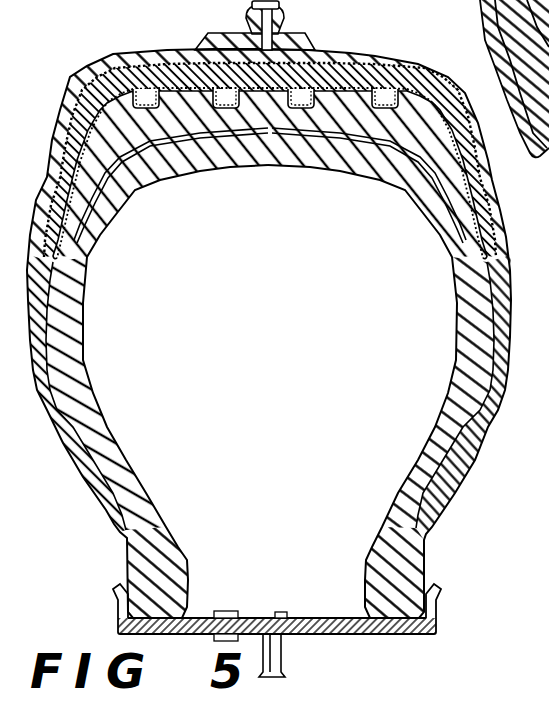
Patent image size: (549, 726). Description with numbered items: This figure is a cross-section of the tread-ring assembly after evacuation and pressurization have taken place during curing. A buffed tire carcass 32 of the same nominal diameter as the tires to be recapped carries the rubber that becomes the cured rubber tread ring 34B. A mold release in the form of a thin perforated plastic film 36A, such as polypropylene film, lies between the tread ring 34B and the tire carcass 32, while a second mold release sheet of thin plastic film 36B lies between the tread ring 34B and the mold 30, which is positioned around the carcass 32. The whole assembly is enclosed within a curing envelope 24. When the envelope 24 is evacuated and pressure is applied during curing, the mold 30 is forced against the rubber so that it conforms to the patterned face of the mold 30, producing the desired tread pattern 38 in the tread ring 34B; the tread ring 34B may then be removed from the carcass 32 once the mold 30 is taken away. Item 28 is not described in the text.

The curing envelope 24 is at (269, 324).
The valve stem 28 is at (278, 28).
The mold 30 is at (342, 53).
The buffed tire carcass 32 is at (93, 393).
The cured rubber tread ring 34B is at (347, 102).
The perforated plastic film 36A is at (118, 222).
The plastic film 36B is at (168, 97).
The tread pattern 38 is at (240, 94).